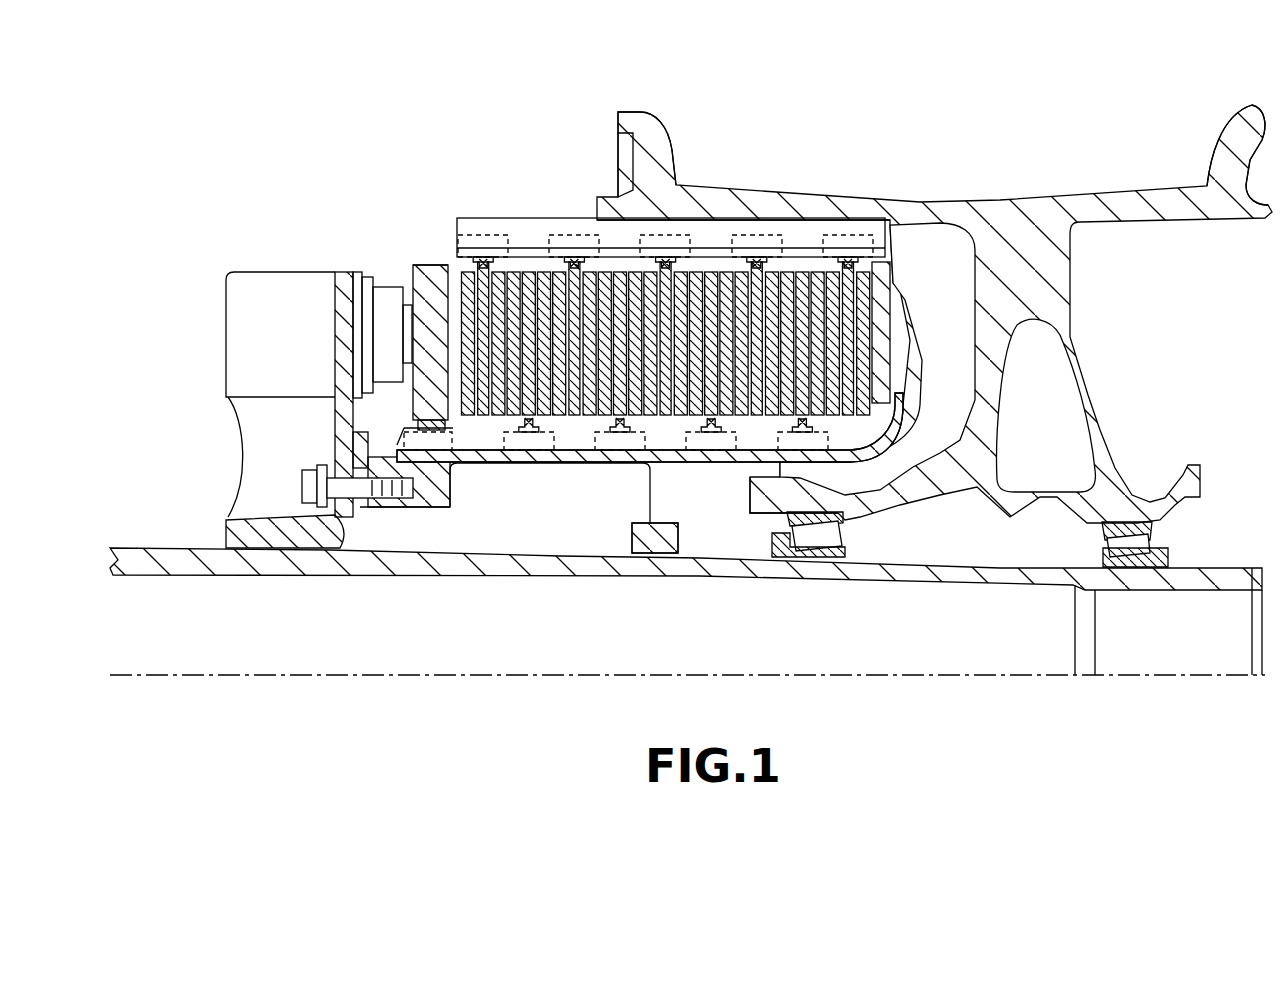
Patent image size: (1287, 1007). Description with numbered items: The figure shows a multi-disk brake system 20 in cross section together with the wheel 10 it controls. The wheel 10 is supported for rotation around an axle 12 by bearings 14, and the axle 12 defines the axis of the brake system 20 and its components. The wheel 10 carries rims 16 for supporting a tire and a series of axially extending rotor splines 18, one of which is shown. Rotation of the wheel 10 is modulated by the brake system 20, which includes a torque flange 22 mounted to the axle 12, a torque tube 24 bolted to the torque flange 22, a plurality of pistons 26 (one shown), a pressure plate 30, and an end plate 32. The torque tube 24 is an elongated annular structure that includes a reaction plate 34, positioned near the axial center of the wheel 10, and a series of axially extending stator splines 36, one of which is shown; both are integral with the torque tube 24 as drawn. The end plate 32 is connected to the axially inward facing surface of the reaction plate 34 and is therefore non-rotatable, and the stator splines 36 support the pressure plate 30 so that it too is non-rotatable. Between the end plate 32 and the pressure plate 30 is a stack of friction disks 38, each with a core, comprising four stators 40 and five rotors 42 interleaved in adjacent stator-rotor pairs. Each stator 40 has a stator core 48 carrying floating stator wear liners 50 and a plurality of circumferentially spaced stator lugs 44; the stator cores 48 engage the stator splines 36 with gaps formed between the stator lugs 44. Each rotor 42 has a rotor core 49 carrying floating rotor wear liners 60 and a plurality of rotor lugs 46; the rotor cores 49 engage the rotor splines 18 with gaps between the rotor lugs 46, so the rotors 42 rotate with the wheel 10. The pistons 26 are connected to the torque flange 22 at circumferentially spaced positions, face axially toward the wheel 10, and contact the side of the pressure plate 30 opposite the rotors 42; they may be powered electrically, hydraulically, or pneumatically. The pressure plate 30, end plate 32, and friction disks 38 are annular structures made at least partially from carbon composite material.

The wheel 10 is at (1027, 280).
The axle 12 is at (211, 562).
The bearings 14 is at (840, 530).
The rims 16 is at (662, 122).
The rotor splines 18 is at (626, 228).
The multi-disk brake system 20 is at (332, 229).
The torque flange 22 is at (342, 431).
The torque tube 24 is at (500, 455).
The pistons 26 is at (393, 302).
The pressure plate 30 is at (413, 265).
The end plate 32 is at (912, 213).
The reaction plate 34 is at (950, 378).
The stator splines 36 is at (571, 442).
The friction disks 38 is at (458, 266).
The stator 40 is at (529, 432).
The rotor 42 is at (483, 258).
The stator lugs 44 is at (777, 443).
The rotor lugs 46 is at (747, 240).
The stator core 48 is at (803, 308).
The rotor core 49 is at (847, 333).
The floating stator wear liners 50 is at (808, 258).
The floating rotor wear liners 60 is at (490, 417).